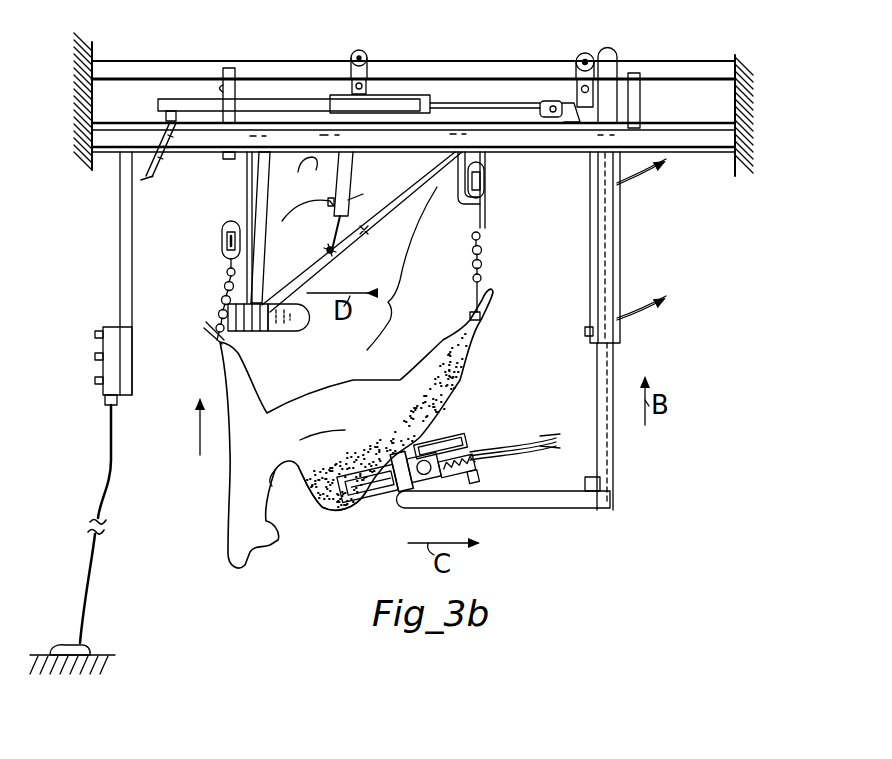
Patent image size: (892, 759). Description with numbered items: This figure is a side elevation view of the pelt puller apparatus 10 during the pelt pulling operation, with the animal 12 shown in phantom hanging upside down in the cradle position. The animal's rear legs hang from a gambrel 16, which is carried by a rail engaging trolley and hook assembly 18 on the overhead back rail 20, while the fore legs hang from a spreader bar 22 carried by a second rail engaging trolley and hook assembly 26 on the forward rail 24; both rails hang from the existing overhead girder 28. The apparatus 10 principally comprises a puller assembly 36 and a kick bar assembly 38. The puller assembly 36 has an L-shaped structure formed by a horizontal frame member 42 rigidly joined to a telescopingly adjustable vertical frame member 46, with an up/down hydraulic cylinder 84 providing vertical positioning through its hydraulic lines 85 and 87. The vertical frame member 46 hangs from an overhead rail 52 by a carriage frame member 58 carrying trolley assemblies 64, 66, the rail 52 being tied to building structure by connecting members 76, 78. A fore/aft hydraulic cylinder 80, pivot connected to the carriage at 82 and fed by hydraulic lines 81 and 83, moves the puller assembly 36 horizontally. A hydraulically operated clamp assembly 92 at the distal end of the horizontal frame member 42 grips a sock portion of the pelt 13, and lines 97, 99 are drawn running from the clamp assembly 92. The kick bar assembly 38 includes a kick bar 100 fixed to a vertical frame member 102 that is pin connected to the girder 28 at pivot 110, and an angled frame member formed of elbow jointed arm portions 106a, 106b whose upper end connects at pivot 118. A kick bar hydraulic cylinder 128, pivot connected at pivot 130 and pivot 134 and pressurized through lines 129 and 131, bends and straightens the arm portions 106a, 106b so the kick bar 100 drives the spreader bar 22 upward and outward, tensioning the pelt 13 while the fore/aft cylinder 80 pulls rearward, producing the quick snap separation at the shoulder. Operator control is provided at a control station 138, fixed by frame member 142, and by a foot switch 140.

The pelt puller apparatus 10 is at (640, 494).
The animal 12 is at (200, 500).
The pelt 13 is at (308, 505).
The gambrel 16 is at (505, 276).
The rail engaging trolley and hook assembly 18 is at (482, 216).
The back rail 20 is at (484, 186).
The spreader bar 22 is at (214, 336).
The forward rail 24 is at (229, 227).
The second rail engaging trolley and hook assembly 26 is at (215, 237).
The overhead girder 28 is at (110, 138).
The puller assembly 36 is at (632, 287).
The kick bar assembly 38 is at (408, 268).
The horizontal frame member 42 is at (520, 508).
The telescopingly adjustable vertical frame member 46 is at (618, 270).
The overhead rail 52 is at (262, 62).
The frame member 58 is at (380, 90).
The trolley assembly 64 is at (595, 44).
The trolley assembly 66 is at (350, 50).
The connecting member 76 is at (640, 104).
The connecting member 78 is at (226, 68).
The fore/aft hydraulic cylinder 80 is at (190, 100).
The hydraulic line 81 is at (150, 160).
The pivot connection 82 is at (553, 118).
The hydraulic line 83 is at (396, 177).
The up/down hydraulic cylinder 84 is at (590, 302).
The hydraulic line 85 is at (646, 178).
The hydraulic line 87 is at (640, 314).
The clamp assembly 92 is at (452, 434).
The cable 97 is at (534, 448).
The hose 99 is at (538, 440).
The kick bar 100 is at (259, 333).
The vertical frame member 102 is at (248, 275).
The elbow jointed arm portion 106a is at (294, 312).
The elbow jointed arm portion 106b is at (362, 232).
The pivot 110 is at (244, 166).
The pivot 118 is at (500, 178).
The kick bar hydraulic cylinder 128 is at (365, 230).
The hydraulic line 129 is at (302, 180).
The pivot 130 is at (333, 255).
The hydraulic line 131 is at (326, 213).
The pivot 134 is at (352, 165).
The control station 138 is at (122, 330).
The foot switch 140 is at (66, 648).
The frame member 142 is at (124, 242).